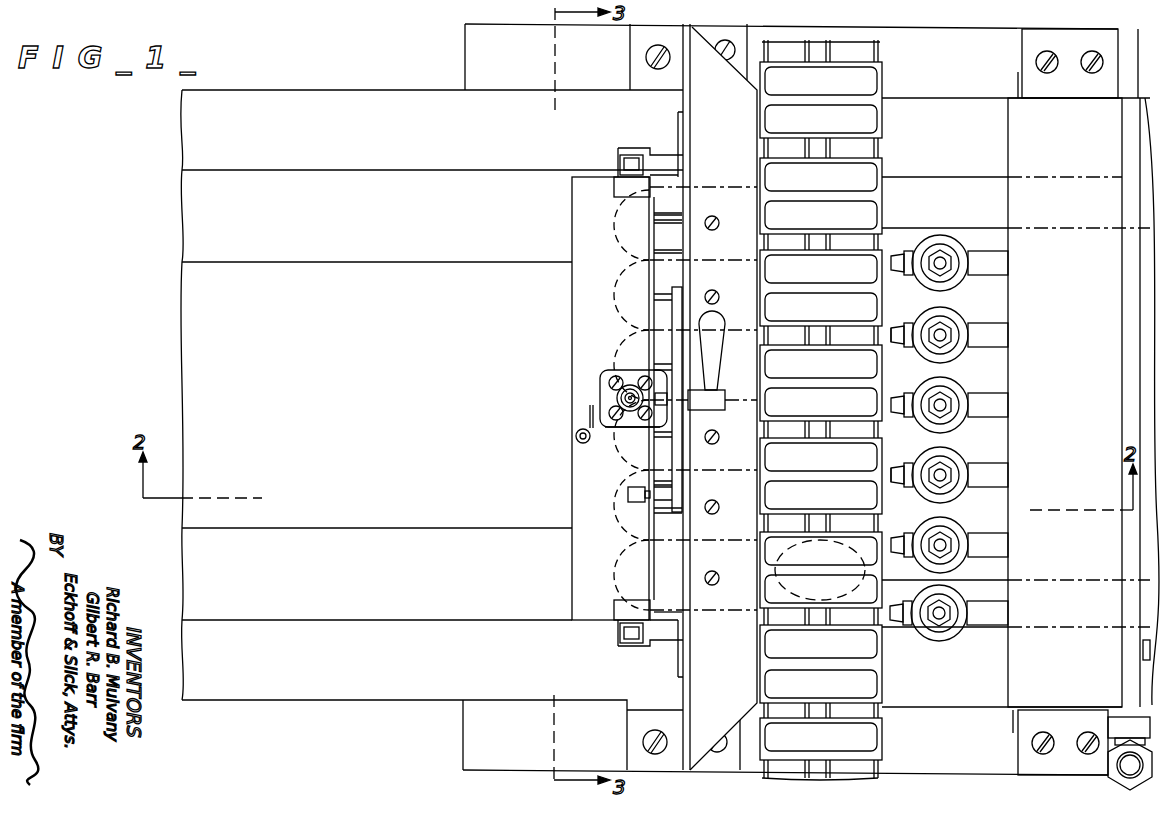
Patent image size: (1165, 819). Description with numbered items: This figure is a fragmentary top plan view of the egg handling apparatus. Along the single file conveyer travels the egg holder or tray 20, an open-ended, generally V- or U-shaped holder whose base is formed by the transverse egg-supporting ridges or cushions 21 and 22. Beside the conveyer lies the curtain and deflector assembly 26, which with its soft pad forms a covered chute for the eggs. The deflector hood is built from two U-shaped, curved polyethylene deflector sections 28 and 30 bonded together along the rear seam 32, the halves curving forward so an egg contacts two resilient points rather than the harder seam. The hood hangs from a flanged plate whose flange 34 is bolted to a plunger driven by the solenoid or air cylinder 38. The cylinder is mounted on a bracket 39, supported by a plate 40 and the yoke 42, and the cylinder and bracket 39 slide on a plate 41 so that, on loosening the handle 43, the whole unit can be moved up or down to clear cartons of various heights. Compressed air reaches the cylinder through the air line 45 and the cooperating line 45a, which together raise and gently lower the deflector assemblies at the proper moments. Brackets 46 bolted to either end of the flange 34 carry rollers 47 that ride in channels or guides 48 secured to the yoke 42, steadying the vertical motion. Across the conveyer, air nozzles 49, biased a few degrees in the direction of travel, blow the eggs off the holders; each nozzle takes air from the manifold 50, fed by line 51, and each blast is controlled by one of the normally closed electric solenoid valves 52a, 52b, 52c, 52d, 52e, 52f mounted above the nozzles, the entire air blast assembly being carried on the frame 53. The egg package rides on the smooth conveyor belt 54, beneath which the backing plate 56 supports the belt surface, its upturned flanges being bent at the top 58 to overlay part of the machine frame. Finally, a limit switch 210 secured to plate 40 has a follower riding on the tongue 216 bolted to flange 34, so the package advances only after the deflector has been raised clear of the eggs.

The egg holder or tray 20 is at (892, 84).
The egg-supporting ridge or cushion 21 is at (824, 653).
The egg-supporting ridge or cushion 22 is at (824, 695).
The curtain and deflector assembly 26 is at (663, 618).
The deflector section 28 is at (674, 211).
The deflector section 30 is at (674, 251).
The seam 32 is at (672, 222).
The flange 34 is at (578, 325).
The solenoid or air cylinder 38 is at (618, 370).
The bracket 39 is at (632, 427).
The plate 40 is at (672, 455).
The plate 41 is at (667, 383).
The yoke 42 is at (724, 654).
The handle 43 is at (714, 322).
The air line 45 is at (618, 394).
The air line 45a is at (586, 417).
The bracket 46 is at (614, 187).
The roller 47 is at (620, 165).
The channel or guide 48 is at (616, 152).
The air nozzle 49 is at (893, 343).
The manifold 50 is at (1130, 560).
The line 51 is at (1133, 712).
The electric solenoid valve 52a is at (950, 636).
The electric solenoid valve 52b is at (959, 523).
The electric solenoid valve 52c is at (959, 453).
The electric solenoid valve 52d is at (959, 383).
The electric solenoid valve 52e is at (959, 313).
The electric solenoid valve 52f is at (959, 245).
The frame 53 is at (1080, 365).
The conveyor belt 54 is at (390, 373).
The backing plate 56 is at (394, 216).
The bent top of flange 58 is at (437, 139).
The limit switch 210 is at (660, 493).
The tongue 216 is at (628, 493).